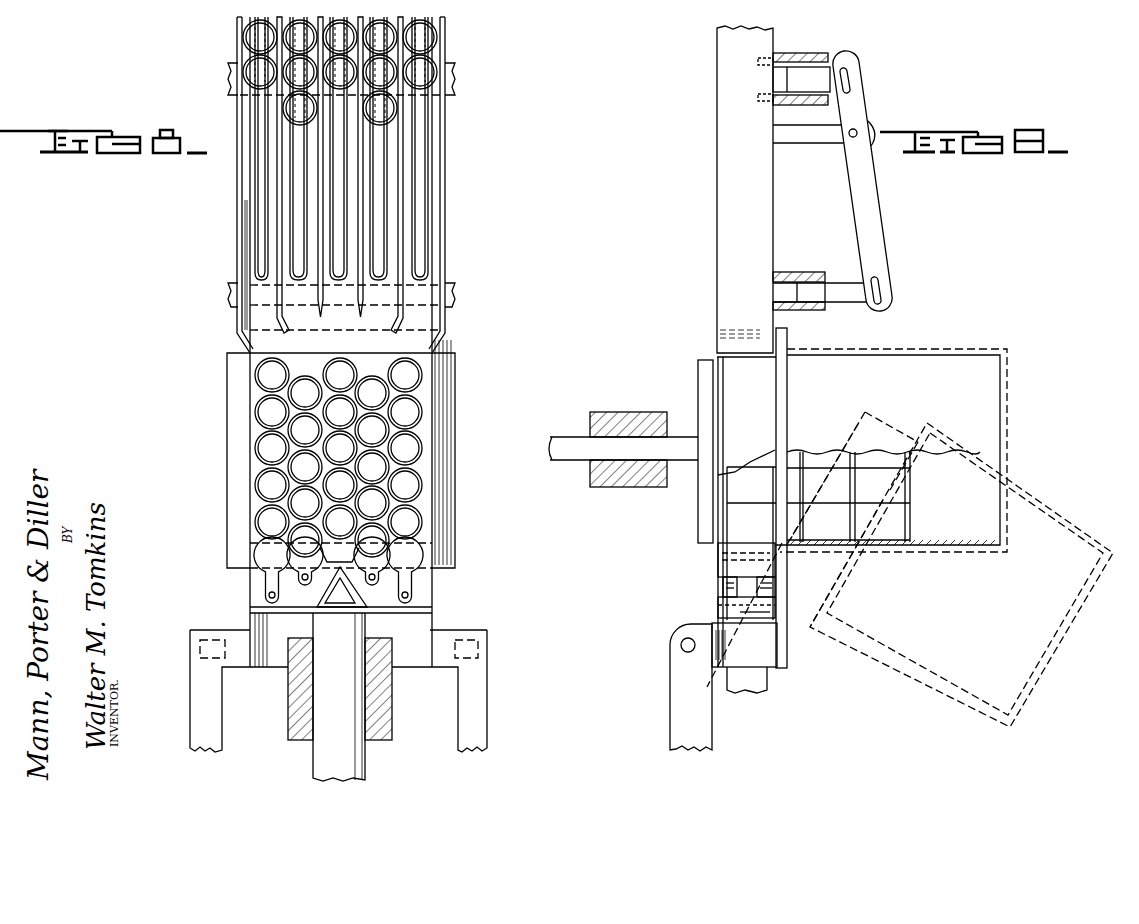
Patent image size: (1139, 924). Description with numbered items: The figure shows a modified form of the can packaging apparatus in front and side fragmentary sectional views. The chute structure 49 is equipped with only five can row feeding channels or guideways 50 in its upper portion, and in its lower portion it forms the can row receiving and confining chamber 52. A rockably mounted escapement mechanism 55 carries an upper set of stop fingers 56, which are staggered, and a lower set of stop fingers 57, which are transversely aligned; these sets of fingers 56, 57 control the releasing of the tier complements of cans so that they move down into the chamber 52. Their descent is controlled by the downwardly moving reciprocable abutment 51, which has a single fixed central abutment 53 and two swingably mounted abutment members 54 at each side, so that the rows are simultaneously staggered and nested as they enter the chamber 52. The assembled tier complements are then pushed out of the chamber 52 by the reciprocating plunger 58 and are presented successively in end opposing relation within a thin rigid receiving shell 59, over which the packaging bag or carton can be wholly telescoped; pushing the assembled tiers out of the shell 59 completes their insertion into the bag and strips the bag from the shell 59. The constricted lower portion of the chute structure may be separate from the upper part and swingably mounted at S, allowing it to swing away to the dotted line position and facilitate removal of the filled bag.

In FIG. 8, the chute structure 49 is at (448, 197).
In FIG. 9, the chute structure 49 is at (716, 209).
In FIG. 8, the can row feeding channels or guideways 50 is at (392, 137).
In FIG. 8, the reciprocable abutment 51 is at (386, 592).
In FIG. 9, the reciprocable abutment 51 is at (728, 605).
In FIG. 8, the can row receiving and confining chamber 52 is at (440, 428).
In FIG. 9, the can row receiving and confining chamber 52 is at (778, 365).
In FIG. 8, the fixed central abutment 53 is at (340, 553).
In FIG. 8, the swingably mounted abutment members 54 is at (298, 540).
In FIG. 9, the swingably mounted abutment members 54 is at (730, 562).
In FIG. 9, the escapement mechanism 55 is at (872, 220).
In FIG. 8, the upper set of stop fingers 56 is at (290, 112).
In FIG. 9, the upper set of stop fingers 56 is at (758, 61).
In FIG. 8, the lower set of stop fingers 57 is at (297, 280).
In FIG. 9, the lower set of stop fingers 57 is at (790, 282).
In FIG. 9, the reciprocating plunger 58 is at (699, 384).
In FIG. 9, the thin rigid receiving shell 59 is at (912, 370).
In FIG. 8, the swingable mounting S is at (200, 650).
In FIG. 9, the swingable mounting S is at (681, 645).